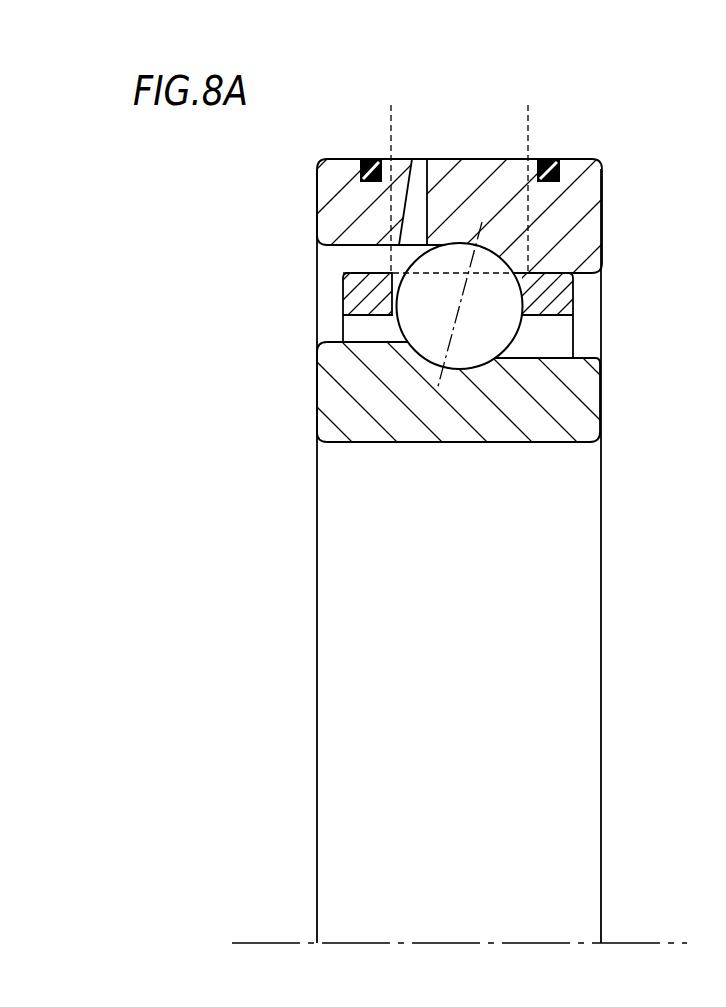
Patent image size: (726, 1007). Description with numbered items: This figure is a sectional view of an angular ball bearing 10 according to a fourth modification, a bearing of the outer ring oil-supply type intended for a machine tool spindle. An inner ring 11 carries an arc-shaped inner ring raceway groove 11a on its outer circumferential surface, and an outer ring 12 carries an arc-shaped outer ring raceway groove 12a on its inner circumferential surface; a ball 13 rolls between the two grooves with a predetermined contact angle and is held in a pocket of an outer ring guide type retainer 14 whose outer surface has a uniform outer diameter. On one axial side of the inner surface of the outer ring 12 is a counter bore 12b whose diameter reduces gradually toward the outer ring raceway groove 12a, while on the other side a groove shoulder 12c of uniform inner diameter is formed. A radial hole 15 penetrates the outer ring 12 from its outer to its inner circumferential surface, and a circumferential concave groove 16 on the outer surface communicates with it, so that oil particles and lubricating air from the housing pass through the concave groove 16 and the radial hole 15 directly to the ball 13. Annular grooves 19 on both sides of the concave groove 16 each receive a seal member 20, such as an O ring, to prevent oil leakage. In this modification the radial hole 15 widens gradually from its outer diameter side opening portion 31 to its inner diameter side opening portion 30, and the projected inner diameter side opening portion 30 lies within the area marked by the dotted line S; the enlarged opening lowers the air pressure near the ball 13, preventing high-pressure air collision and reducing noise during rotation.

The angular ball bearing 10 is at (592, 128).
The inner ring 11 is at (342, 402).
The inner ring raceway groove 11a is at (477, 369).
The outer ring 12 is at (342, 198).
The outer ring raceway groove 12a is at (488, 244).
The counter bore 12b is at (340, 253).
The groove shoulder 12c is at (557, 262).
The ball 13 is at (430, 330).
The retainer 14 is at (343, 292).
The radial hole 15 is at (433, 158).
The concave groove 16 is at (420, 158).
The annular groove 19 is at (373, 159).
The seal member 20 is at (547, 159).
The inner diameter side opening portion 30 is at (426, 248).
The outer diameter side opening portion 31 is at (419, 159).
The dotted line S is at (528, 128).